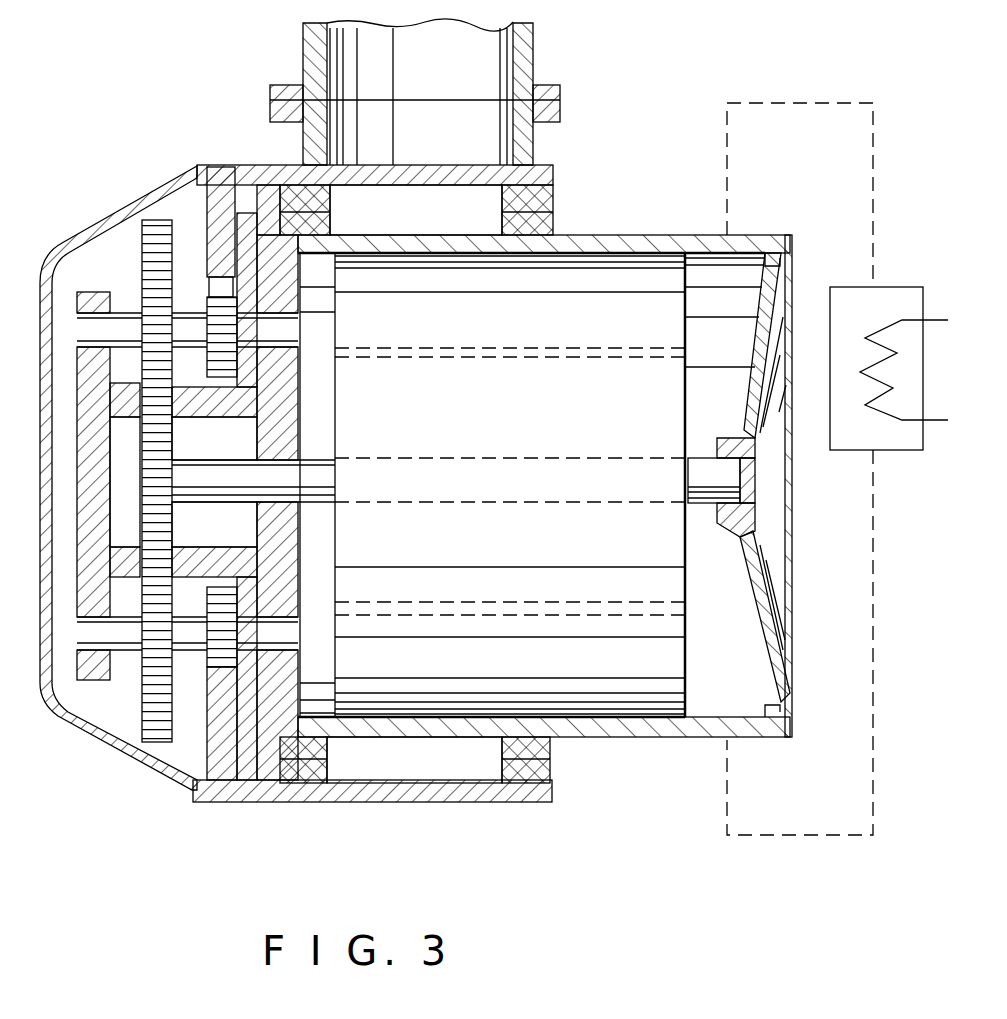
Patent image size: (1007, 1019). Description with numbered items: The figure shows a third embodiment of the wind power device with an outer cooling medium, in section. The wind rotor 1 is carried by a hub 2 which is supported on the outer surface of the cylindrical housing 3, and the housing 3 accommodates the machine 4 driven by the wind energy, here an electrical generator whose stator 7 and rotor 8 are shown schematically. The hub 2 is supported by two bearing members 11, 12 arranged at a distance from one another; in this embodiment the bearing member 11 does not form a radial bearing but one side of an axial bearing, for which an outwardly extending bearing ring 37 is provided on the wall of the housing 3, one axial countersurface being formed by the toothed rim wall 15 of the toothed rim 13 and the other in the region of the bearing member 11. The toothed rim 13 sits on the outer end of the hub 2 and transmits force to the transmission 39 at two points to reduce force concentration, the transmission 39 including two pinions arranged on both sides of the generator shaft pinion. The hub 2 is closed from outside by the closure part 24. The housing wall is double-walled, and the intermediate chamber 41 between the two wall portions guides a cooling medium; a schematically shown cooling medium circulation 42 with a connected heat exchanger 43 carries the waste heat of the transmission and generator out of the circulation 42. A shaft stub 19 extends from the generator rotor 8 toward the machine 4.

The rotor 1 is at (522, 55).
The hub 2 is at (557, 118).
The housing 3 is at (613, 730).
The machine 4 is at (750, 602).
The stator 7 is at (643, 643).
The rotor 8 is at (652, 562).
The bearing member 11 is at (330, 777).
The bearing member 12 is at (438, 792).
The toothed rim 13 is at (217, 750).
The toothed rim wall 15 is at (218, 792).
The shaft stub 19 is at (697, 458).
The closure part 24 is at (193, 783).
The bearing ring 37 is at (267, 752).
The transmission 39 is at (182, 227).
The intermediate chamber 41 is at (723, 727).
The cooling medium circulation 42 is at (873, 183).
The heat exchanger 43 is at (888, 303).